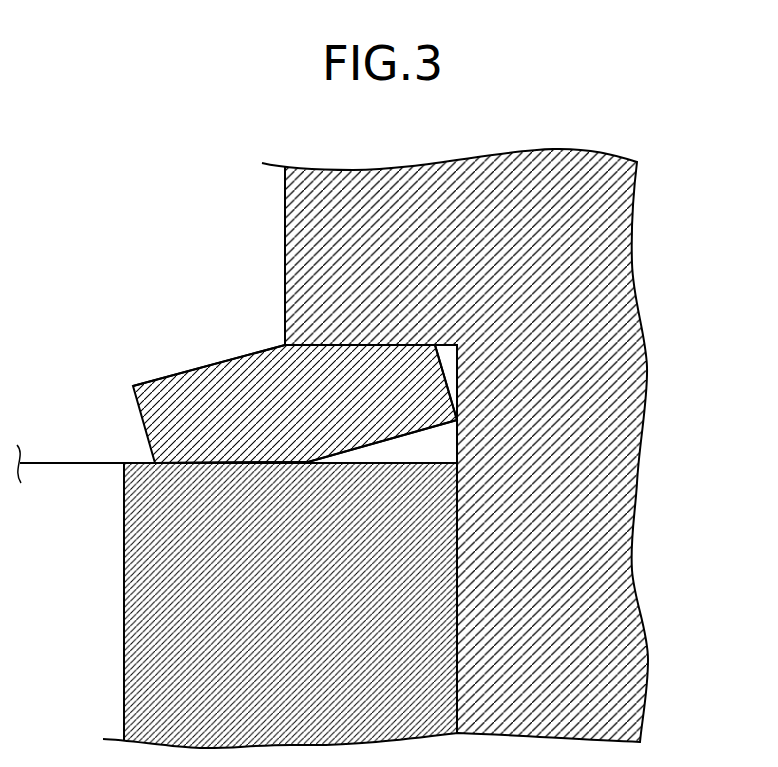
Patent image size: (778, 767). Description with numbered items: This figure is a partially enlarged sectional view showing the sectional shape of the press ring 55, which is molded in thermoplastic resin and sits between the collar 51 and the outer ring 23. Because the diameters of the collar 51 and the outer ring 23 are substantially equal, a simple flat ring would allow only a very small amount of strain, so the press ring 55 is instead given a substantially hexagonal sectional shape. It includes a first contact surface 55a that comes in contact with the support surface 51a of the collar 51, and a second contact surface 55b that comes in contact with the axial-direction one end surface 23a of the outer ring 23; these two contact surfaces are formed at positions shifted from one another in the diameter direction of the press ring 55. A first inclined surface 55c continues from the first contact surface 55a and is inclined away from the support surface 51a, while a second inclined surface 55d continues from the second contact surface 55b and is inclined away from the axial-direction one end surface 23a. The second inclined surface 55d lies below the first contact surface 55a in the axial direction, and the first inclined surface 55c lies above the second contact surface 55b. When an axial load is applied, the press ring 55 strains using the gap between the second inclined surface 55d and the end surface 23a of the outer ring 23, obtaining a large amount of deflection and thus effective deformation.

The collar 51 is at (293, 229).
The support surface 51a is at (413, 346).
The outer ring 23 is at (628, 600).
The axial-direction one end surface 23a is at (198, 462).
The press ring 55 is at (177, 383).
The first contact surface 55a is at (385, 343).
The second contact surface 55b is at (223, 464).
The first inclined surface 55c is at (227, 360).
The second inclined surface 55d is at (408, 435).